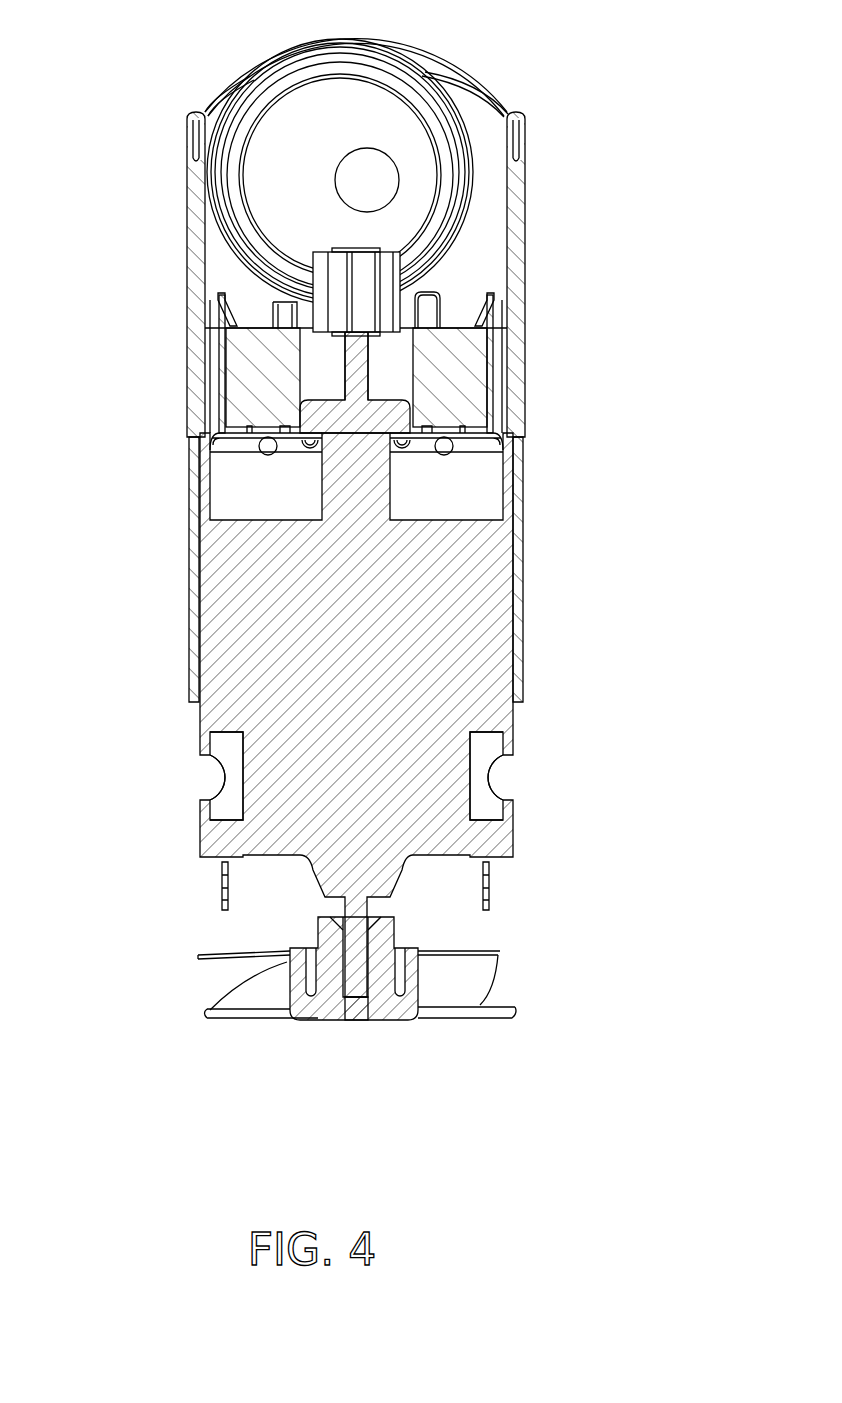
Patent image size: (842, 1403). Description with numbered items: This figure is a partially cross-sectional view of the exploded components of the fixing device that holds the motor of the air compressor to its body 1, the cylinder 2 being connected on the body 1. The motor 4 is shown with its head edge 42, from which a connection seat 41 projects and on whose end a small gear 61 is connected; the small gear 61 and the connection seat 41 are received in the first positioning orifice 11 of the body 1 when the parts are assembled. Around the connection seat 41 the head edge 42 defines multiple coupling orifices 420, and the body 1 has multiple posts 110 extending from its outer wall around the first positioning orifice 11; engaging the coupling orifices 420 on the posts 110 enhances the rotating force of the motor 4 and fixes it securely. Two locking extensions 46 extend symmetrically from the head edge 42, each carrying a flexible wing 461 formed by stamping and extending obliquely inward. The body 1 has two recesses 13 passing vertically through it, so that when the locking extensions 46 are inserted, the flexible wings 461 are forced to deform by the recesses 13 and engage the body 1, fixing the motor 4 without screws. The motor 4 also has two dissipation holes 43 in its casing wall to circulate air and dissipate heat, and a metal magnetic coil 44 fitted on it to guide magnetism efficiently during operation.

The body 1 is at (460, 365).
The cylinder 2 is at (430, 120).
The motor 4 is at (447, 803).
The first positioning orifice 11 is at (388, 357).
The recess 13 is at (216, 372).
The connection seat 41 is at (335, 410).
The head edge 42 is at (467, 430).
The dissipation hole 43 is at (215, 775).
The magnetic coil 44 is at (195, 608).
The locking extension 46 is at (210, 356).
The small gear 61 is at (343, 267).
The post 110 is at (262, 445).
The coupling orifice 420 is at (247, 434).
The flexible wing 461 is at (220, 323).